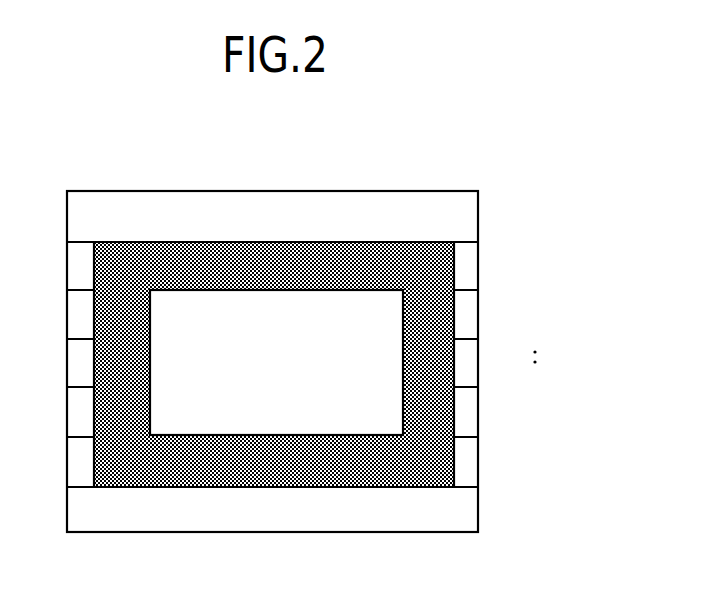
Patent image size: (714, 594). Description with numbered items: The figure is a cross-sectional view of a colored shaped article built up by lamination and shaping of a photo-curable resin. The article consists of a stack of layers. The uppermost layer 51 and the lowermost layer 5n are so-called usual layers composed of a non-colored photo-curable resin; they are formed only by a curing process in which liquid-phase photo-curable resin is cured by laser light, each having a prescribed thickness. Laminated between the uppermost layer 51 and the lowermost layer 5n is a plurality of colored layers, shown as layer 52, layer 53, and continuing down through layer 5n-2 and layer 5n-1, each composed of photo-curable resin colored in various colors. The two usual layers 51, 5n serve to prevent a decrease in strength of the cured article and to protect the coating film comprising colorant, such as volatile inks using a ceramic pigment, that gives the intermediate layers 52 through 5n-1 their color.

The uppermost layer 51 is at (467, 214).
The colored layer 52 is at (467, 272).
The colored layer 53 is at (467, 319).
The colored layer 5n-2 is at (467, 415).
The colored layer 5n-1 is at (467, 464).
The lowermost layer 5n is at (467, 517).